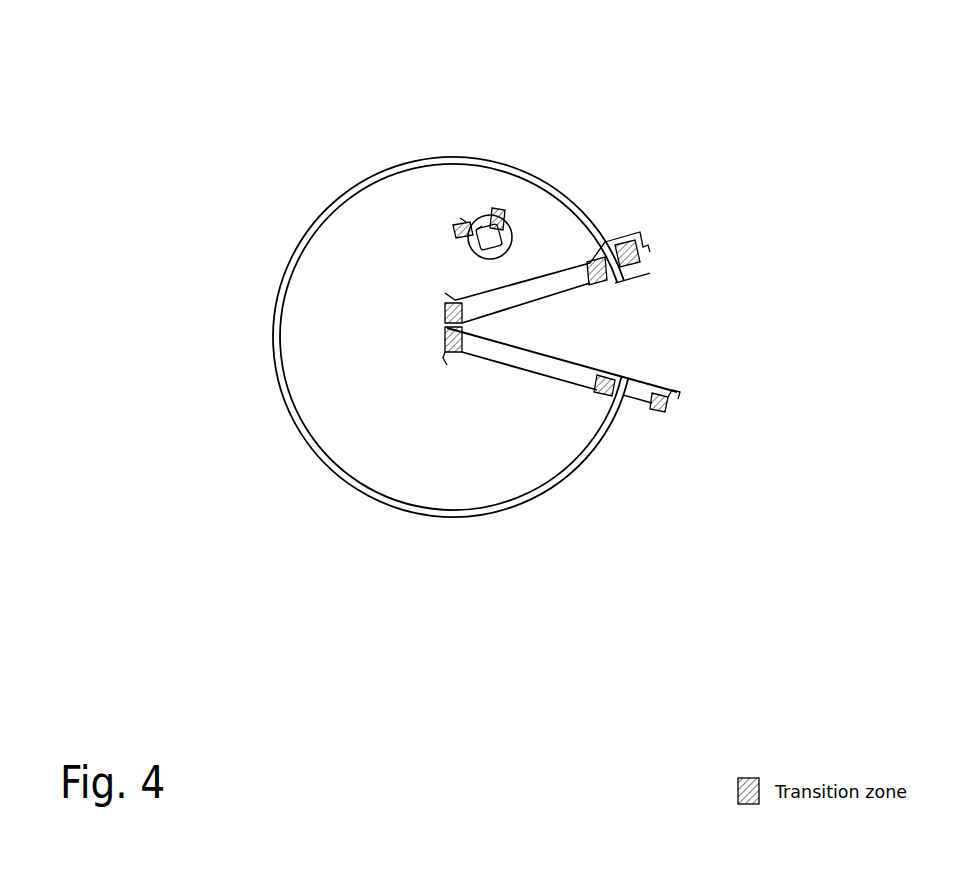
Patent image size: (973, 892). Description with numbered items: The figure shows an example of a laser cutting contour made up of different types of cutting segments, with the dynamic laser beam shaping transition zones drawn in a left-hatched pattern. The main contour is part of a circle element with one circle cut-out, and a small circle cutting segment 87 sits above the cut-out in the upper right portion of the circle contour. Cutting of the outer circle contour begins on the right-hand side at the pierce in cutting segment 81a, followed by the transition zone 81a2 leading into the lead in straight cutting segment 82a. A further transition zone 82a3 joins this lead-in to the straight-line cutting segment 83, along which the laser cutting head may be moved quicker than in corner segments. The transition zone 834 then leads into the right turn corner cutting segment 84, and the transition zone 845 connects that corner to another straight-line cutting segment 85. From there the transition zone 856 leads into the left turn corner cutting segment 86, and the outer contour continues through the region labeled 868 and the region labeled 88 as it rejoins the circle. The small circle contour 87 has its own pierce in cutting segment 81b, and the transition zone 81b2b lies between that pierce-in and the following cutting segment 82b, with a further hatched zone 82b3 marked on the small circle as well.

The pierce in cutting segment 81a is at (678, 396).
The dynamic laser beam shaping transition zone 81a2 is at (655, 416).
The pierce in cutting segment 81b is at (476, 230).
The dynamic laser beam shaping transition zone 81b2b is at (503, 195).
The lead in straight cutting segment 82a is at (624, 402).
The dynamic laser beam shaping transition zone 82a3 is at (598, 405).
The cutting segment 82b is at (474, 261).
The second connecting section transition zone 82b3 is at (455, 227).
The straight-line cutting segment 83 is at (525, 371).
The dynamic laser beam shaping transition zone 834 is at (447, 355).
The right turn corner cutting segment 84 is at (445, 328).
The dynamic laser beam shaping transition zone 845 is at (445, 295).
The straight-line cutting segment 85 is at (520, 280).
The dynamic laser beam shaping transition zone 856 is at (644, 245).
The left turn corner cutting segment 86 is at (614, 283).
The upper arm extension 868 is at (638, 251).
The circle cutting segment 87 is at (460, 218).
The ring junction 88 is at (600, 224).